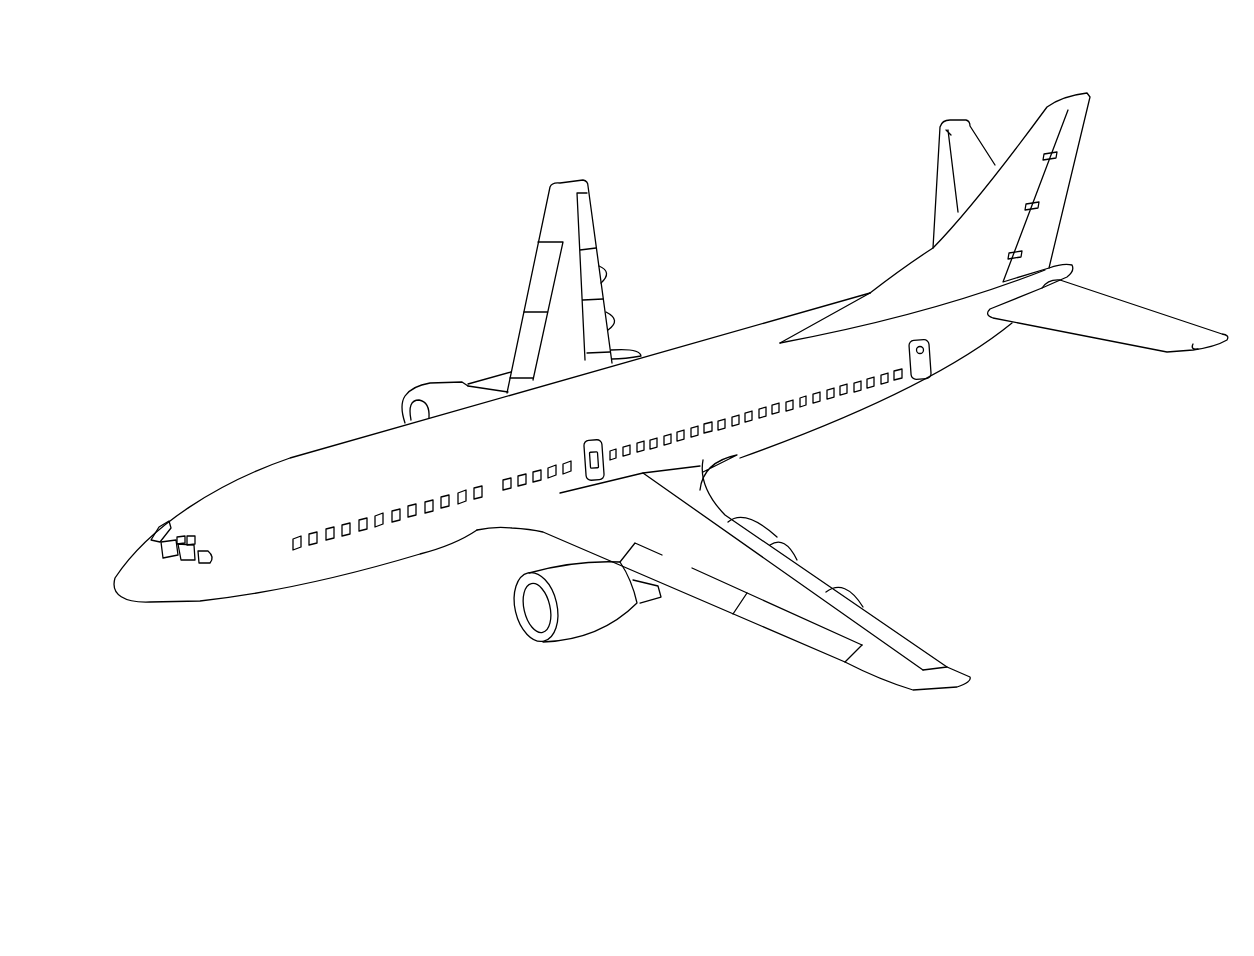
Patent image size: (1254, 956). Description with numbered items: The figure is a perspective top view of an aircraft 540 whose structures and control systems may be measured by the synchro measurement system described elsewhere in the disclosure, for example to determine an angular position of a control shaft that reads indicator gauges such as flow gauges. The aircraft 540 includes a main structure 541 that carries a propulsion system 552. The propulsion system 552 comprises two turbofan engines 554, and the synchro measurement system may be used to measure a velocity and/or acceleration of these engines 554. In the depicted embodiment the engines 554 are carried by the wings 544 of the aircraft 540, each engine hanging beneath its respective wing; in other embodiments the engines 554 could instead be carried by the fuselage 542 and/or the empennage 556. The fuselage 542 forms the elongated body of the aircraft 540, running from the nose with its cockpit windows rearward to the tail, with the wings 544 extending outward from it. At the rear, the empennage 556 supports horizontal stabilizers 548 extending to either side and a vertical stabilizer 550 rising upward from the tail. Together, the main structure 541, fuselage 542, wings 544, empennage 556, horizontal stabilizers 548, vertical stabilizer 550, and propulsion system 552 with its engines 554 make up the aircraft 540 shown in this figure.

The aircraft 540 is at (250, 300).
The main structure 541 is at (255, 428).
The fuselage 542 is at (310, 576).
The wings 544 is at (569, 180).
The horizontal stabilizers 548 is at (961, 120).
The vertical stabilizer 550 is at (1062, 93).
The propulsion system 552 is at (470, 722).
The turbofan engines 554 is at (428, 384).
The empennage 556 is at (808, 252).